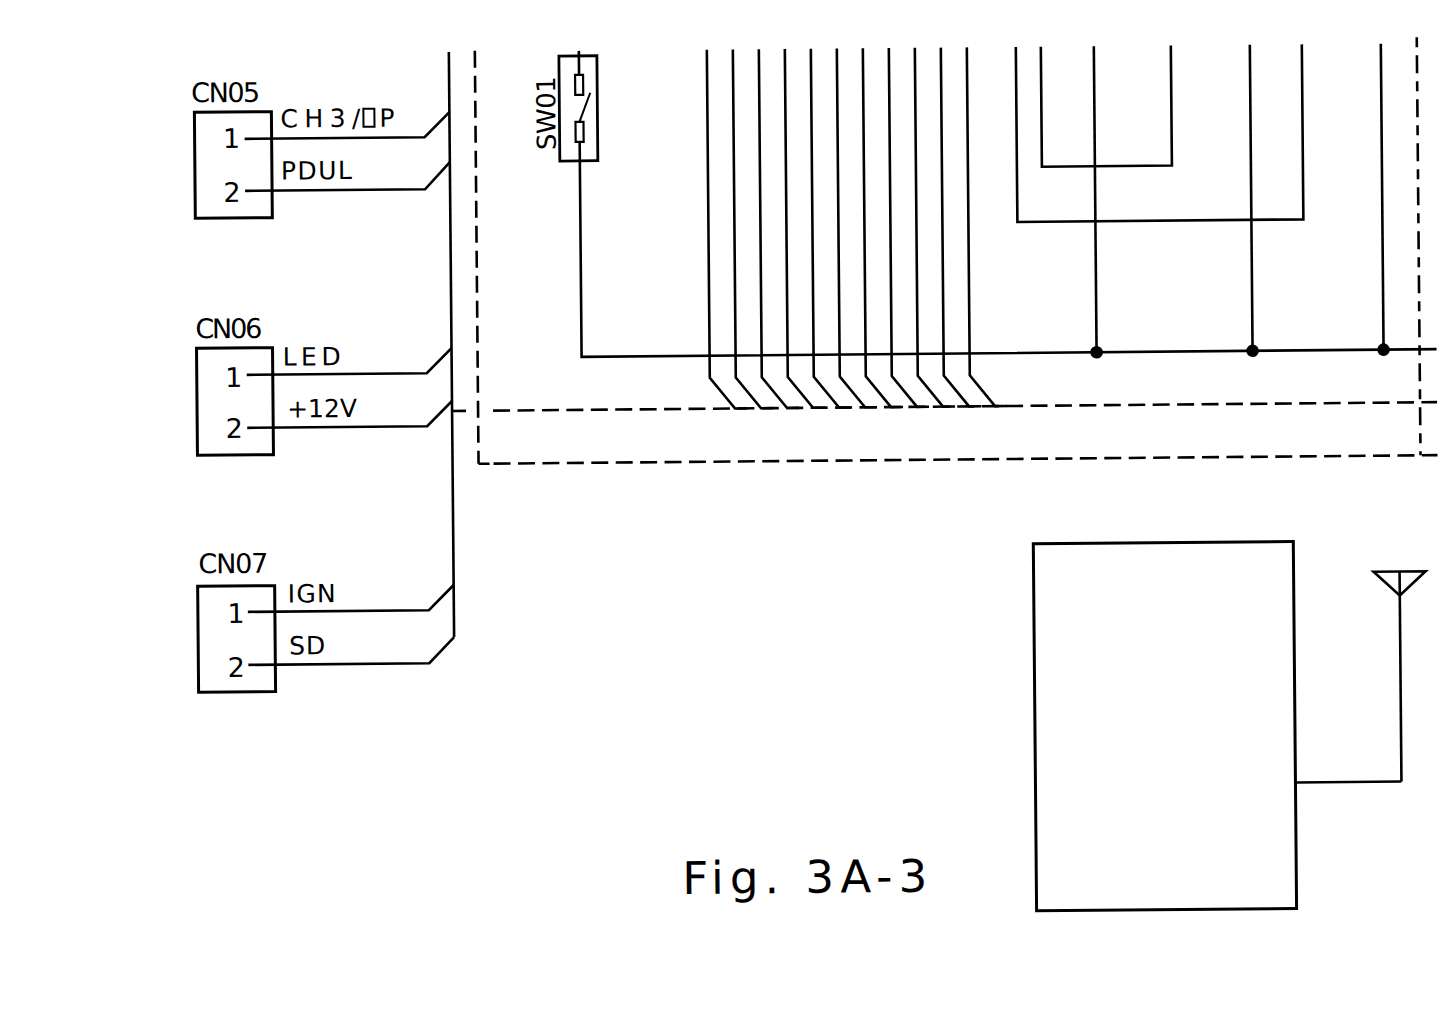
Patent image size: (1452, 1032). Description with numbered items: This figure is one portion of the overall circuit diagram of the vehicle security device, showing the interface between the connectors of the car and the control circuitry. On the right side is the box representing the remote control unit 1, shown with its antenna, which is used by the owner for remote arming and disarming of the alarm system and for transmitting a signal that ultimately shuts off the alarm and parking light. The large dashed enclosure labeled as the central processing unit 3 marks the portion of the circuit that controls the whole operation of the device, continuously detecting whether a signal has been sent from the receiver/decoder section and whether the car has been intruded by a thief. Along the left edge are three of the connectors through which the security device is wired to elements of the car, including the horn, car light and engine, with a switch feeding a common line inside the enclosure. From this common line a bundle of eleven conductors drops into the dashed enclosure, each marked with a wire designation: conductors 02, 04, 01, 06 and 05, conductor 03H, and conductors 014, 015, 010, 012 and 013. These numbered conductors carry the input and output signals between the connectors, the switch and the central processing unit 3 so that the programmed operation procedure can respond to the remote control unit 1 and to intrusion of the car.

The remote control unit 1 is at (1230, 725).
The central processing unit 3 is at (944, 301).
The wire 02 is at (716, 229).
The wire 04 is at (742, 229).
The wire 01 is at (768, 229).
The wire 06 is at (794, 229).
The wire 05 is at (820, 228).
The wire 03H is at (846, 228).
The wire 014 is at (872, 228).
The wire 015 is at (898, 228).
The wire 010 is at (924, 228).
The wire 012 is at (950, 227).
The wire 013 is at (976, 227).